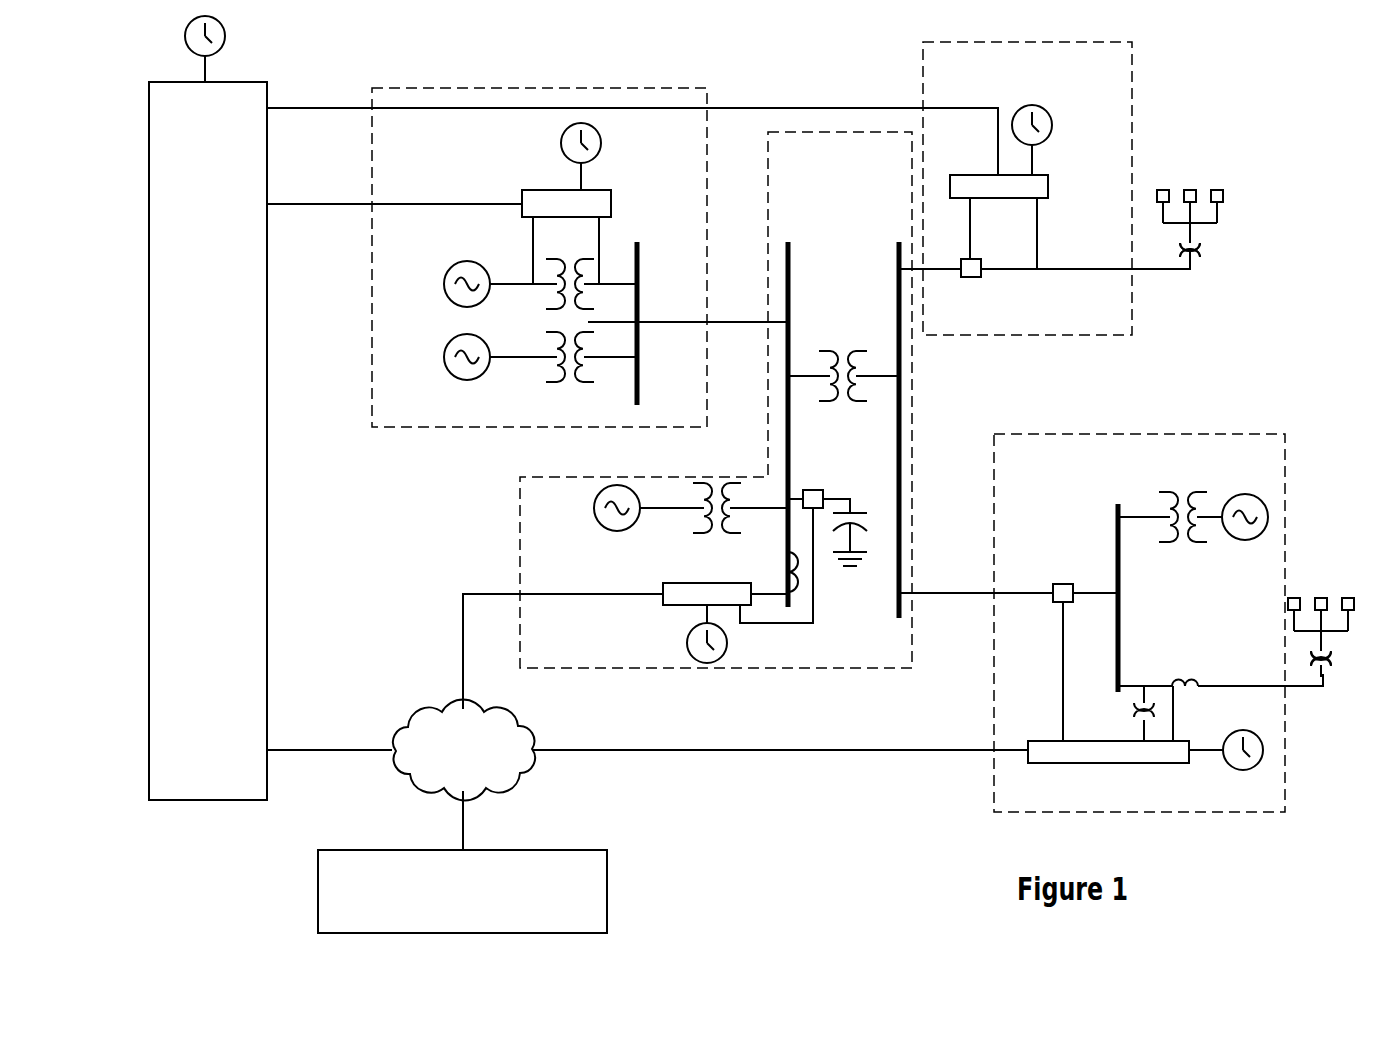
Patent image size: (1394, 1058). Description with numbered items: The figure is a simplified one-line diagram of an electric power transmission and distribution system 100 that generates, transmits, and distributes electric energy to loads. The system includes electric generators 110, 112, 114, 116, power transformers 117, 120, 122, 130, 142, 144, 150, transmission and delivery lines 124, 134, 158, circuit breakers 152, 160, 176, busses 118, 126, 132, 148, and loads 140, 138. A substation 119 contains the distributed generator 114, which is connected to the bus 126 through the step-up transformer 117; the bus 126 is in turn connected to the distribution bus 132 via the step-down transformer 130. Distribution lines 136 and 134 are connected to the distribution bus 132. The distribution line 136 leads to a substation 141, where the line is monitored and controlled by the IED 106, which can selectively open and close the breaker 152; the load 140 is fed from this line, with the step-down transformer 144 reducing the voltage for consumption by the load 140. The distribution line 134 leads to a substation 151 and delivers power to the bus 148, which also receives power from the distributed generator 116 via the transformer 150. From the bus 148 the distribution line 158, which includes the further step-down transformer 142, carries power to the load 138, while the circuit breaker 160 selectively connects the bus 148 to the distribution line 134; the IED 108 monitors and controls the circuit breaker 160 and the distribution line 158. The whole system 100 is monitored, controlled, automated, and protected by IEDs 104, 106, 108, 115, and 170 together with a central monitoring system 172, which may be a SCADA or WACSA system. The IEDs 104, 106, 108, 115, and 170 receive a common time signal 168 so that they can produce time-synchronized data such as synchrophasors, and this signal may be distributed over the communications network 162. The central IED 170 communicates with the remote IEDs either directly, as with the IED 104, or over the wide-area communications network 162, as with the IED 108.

The electric power delivery system 100 is at (1258, 103).
The IED 104 is at (530, 190).
The intelligent electronic device (IED) 106 is at (968, 175).
The IED 108 is at (1158, 764).
The generator 110 is at (444, 284).
The generator 112 is at (444, 357).
The generator 114 is at (594, 508).
The IED 115 is at (738, 583).
The distributed generator 116 is at (1235, 540).
The step-up transformer 117 is at (702, 528).
The bus 118 is at (640, 390).
The substation 119 is at (650, 668).
The transformer 120 is at (546, 301).
The transformer 122 is at (570, 383).
The line 124 is at (722, 323).
The bus 126 is at (791, 400).
The step-down transformer 130 is at (842, 352).
The distribution bus 132 is at (896, 583).
The distribution line 134 is at (1003, 598).
The distribution line 136 is at (961, 278).
The load 138 is at (1318, 604).
The load 140 is at (1226, 205).
The substation 141 is at (1105, 336).
The step-down transformer 142 is at (1335, 660).
The step-down transformer 144 is at (1205, 246).
The bus 148 is at (1115, 508).
The transformer 150 is at (1178, 495).
The substation 151 is at (1215, 813).
The breaker 152 is at (981, 280).
The distribution line 158 is at (1213, 680).
The circuit breaker 160 is at (1058, 584).
The communications network 162 is at (464, 750).
The common time signal 168 is at (225, 37).
The central IED 170 is at (208, 441).
The central monitoring system 172 is at (462, 891).
The breaker 176 is at (812, 490).